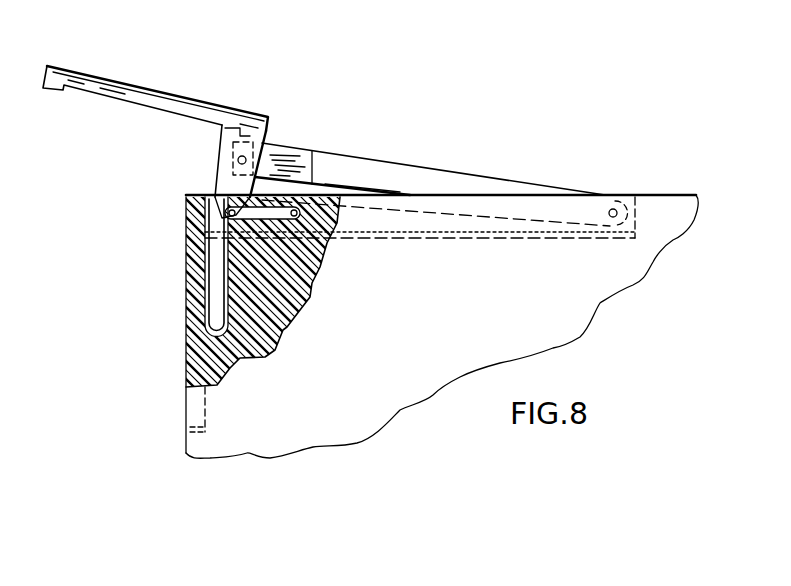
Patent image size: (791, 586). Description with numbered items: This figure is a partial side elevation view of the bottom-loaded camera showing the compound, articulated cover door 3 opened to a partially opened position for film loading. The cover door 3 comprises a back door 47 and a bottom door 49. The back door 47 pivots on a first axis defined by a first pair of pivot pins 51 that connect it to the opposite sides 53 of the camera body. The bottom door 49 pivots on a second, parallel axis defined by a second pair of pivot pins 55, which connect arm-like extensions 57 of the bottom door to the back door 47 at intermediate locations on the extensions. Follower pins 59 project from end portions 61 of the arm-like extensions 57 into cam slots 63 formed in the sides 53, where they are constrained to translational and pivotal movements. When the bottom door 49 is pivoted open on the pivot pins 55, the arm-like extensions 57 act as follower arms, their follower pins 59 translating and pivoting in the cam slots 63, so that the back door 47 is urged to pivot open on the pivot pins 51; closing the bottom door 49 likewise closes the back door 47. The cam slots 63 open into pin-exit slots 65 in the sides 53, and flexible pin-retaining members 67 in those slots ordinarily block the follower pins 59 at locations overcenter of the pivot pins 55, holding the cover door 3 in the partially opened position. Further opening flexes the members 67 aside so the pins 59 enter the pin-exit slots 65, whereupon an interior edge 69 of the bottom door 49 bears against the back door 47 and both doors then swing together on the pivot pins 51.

The cover door 3 is at (356, 158).
The back door 47 is at (473, 174).
The bottom door 49 is at (128, 84).
The pivot pins 51 is at (610, 197).
The opposite sides of the camera body 53 is at (550, 325).
The pivot pins 55 is at (238, 158).
The arm-like extensions 57 is at (222, 130).
The follower pins 59 is at (322, 250).
The end portions 61 is at (227, 216).
The cam slots 63 is at (306, 289).
The pin-exit slots 65 is at (212, 225).
The flexible pin-retaining members 67 is at (212, 298).
The interior edge 69 is at (245, 135).